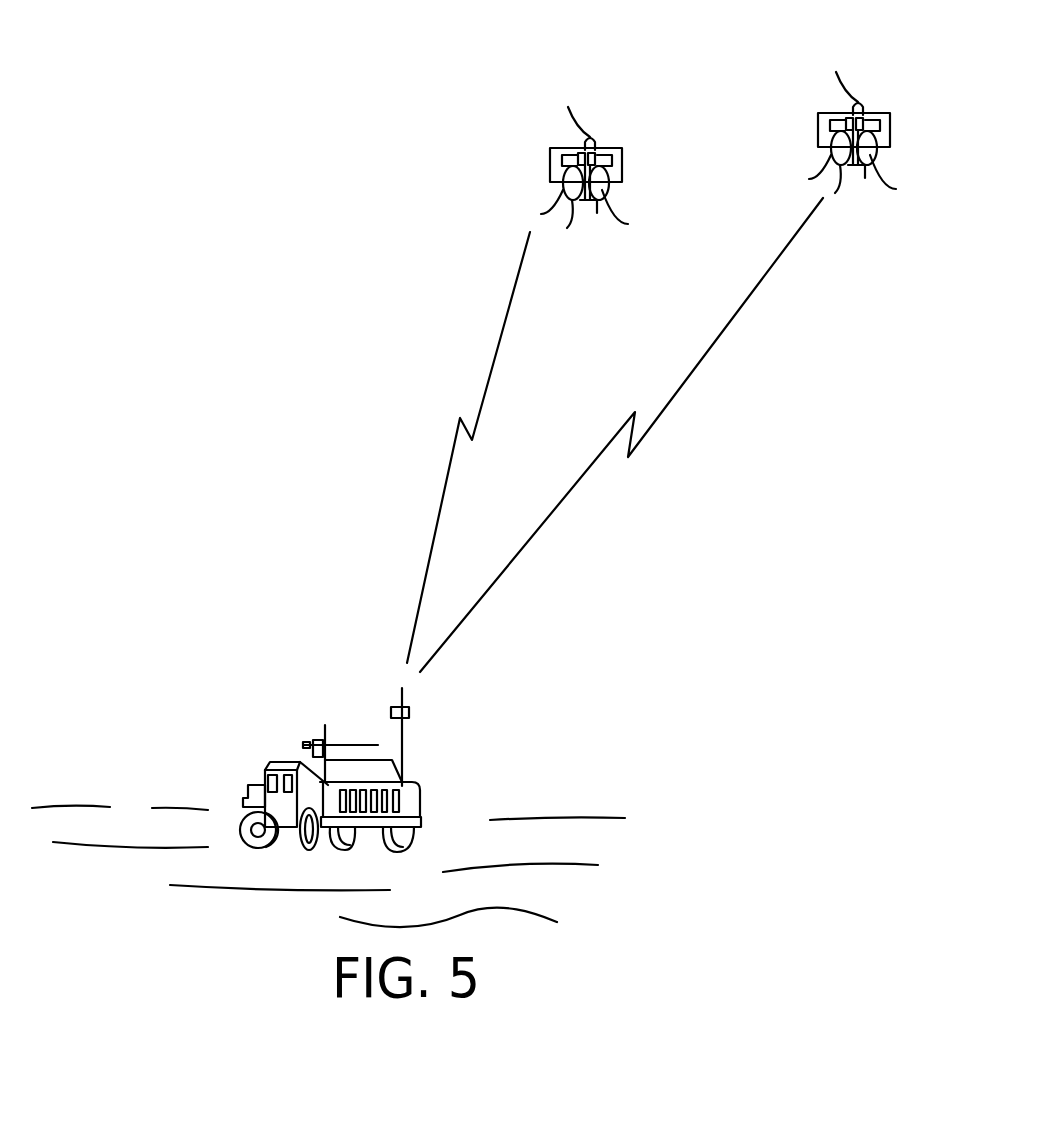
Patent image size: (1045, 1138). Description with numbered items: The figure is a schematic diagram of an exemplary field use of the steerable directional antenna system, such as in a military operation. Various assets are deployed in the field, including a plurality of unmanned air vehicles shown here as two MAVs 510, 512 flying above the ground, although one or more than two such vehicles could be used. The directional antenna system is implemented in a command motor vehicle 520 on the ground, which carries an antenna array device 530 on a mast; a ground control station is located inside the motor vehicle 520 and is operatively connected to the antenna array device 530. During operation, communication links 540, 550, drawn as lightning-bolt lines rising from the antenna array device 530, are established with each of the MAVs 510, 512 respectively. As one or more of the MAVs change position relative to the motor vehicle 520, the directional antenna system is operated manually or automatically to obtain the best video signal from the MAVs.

The MAV 510 is at (543, 170).
The MAV 512 is at (892, 143).
The command motor vehicle 520 is at (422, 805).
The antenna array device 530 is at (392, 717).
The communication link 540 is at (487, 395).
The communication link 550 is at (702, 362).